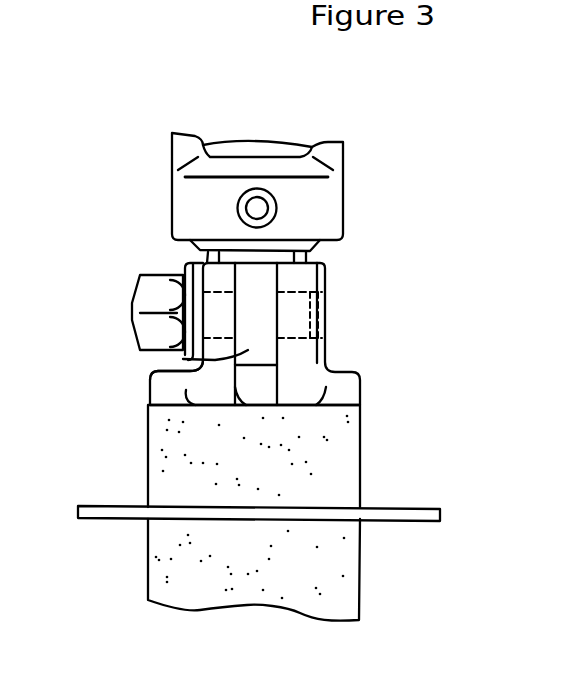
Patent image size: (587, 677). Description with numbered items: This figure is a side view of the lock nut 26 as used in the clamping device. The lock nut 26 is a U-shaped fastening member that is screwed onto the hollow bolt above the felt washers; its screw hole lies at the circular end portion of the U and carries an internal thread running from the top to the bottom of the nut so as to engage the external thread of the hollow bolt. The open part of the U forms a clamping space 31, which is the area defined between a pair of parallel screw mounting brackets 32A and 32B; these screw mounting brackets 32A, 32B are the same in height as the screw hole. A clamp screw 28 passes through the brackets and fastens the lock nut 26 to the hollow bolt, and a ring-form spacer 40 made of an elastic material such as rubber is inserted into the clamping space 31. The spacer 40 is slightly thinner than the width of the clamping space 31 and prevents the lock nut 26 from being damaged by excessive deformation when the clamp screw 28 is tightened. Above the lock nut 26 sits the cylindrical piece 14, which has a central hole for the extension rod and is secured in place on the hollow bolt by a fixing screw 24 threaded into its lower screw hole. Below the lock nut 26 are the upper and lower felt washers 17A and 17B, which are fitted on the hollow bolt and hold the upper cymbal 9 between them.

The cylindrical piece 14 is at (238, 205).
The fixing screw 24 is at (257, 208).
The lock nut 26 is at (368, 357).
The clamp screw 28 is at (143, 293).
The clamping space 31 is at (245, 410).
The screw mounting bracket 32A is at (210, 268).
The screw mounting bracket 32B is at (325, 272).
The ring-form spacer 40 is at (150, 378).
The upper felt washer 17A is at (360, 437).
The lower felt washer 17B is at (353, 585).
The upper cymbal 9 is at (420, 508).